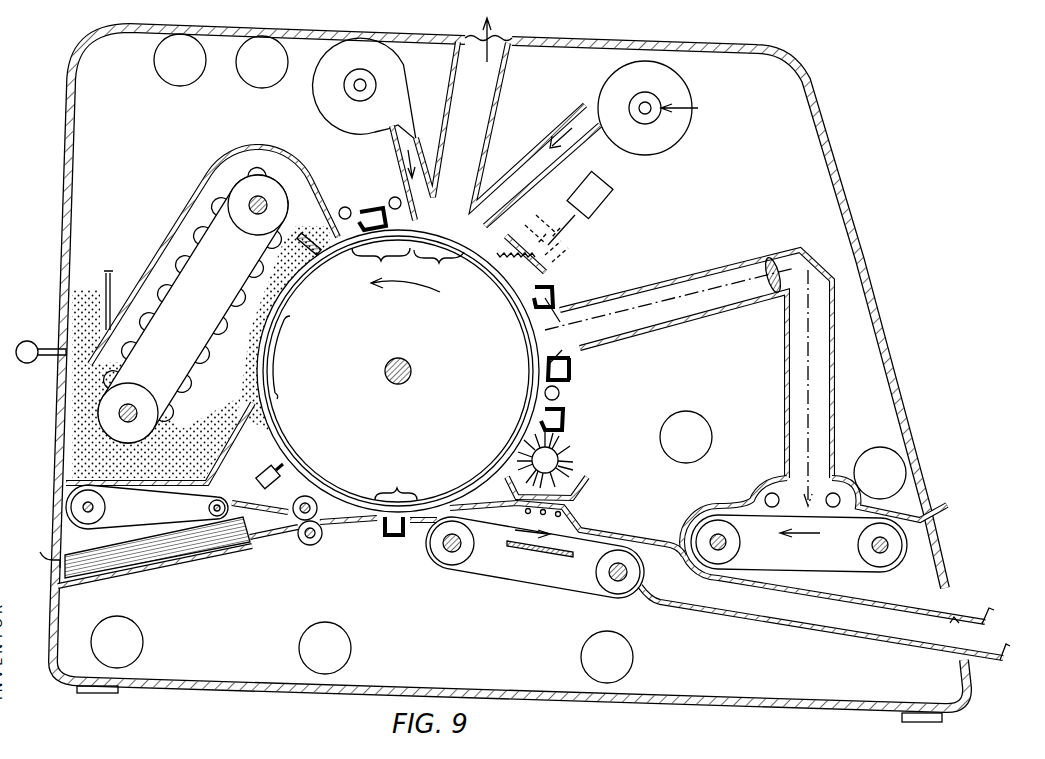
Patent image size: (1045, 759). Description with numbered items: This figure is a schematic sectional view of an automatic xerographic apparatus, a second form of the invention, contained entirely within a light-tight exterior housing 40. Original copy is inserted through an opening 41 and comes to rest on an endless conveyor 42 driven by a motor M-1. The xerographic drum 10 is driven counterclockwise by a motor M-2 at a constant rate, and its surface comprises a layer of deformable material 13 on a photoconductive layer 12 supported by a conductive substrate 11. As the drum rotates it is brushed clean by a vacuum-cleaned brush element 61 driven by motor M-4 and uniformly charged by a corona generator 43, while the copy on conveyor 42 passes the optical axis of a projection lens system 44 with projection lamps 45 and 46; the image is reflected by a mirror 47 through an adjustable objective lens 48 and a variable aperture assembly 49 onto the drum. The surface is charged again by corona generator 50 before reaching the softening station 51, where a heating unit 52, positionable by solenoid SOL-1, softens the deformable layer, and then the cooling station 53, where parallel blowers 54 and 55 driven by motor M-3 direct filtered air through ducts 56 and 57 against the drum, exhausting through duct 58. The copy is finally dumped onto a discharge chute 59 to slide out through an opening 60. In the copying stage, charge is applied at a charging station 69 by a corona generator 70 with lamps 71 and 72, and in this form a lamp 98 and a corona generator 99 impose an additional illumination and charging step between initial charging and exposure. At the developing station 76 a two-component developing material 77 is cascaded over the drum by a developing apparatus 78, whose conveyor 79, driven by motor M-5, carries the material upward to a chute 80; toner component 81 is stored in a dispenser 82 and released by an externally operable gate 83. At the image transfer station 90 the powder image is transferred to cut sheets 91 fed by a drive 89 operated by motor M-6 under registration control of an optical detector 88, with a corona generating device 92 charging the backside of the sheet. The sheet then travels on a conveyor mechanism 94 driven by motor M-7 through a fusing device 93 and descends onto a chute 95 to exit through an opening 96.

The xerographic drum 10 is at (267, 456).
The conductive substrate 11 is at (279, 432).
The photoconductive layer 12 is at (284, 448).
The layer of deformable material 13 is at (289, 463).
The light-tight exterior housing 40 is at (880, 336).
The opening 41 is at (942, 506).
The conveyor 42 is at (858, 569).
The corona generator 43 is at (566, 418).
The projection lens system 44 is at (766, 441).
The projection lamp 45 is at (772, 492).
The projection lamp 46 is at (846, 474).
The mirror 47 is at (798, 252).
The adjustable objective lens 48 is at (764, 264).
The variable aperture assembly 49 is at (550, 335).
The corona generator 50 is at (556, 296).
The softening station 51 is at (492, 292).
The heating unit 52 is at (552, 279).
The cooling station 53 is at (439, 267).
The blower 54 is at (396, 54).
The blower 55 is at (624, 70).
The duct 56 is at (394, 155).
The duct 57 is at (572, 146).
The duct 58 is at (512, 56).
The discharge chute 59 is at (744, 589).
The opening 60 is at (948, 606).
The brush element 61 is at (568, 446).
The charging station 69 is at (381, 266).
The corona generator 70 is at (362, 208).
The lamp 71 is at (345, 207).
The lamp 72 is at (395, 197).
The developing station 76 is at (282, 320).
The two-component developing material 77 is at (228, 430).
The developing apparatus 78 is at (194, 184).
The conveyor 79 is at (202, 430).
The chute 80 is at (306, 249).
The toner component 81 is at (108, 274).
The dispenser 82 is at (92, 284).
The externally operable gate 83 is at (62, 362).
The optical detector 88 is at (278, 484).
The drive 89 is at (72, 507).
The image transfer station 90 is at (396, 485).
The cut sheets 91 is at (180, 553).
The corona generating device 92 is at (394, 538).
The fusing device 93 is at (576, 516).
The conveyor mechanism 94 is at (480, 580).
The chute 95 is at (736, 620).
The opening 96 is at (976, 636).
The lamp 98 is at (560, 393).
The corona generator 99 is at (571, 372).
The motor M-1 is at (880, 545).
The motor M-2 is at (398, 371).
The motor M-3 is at (340, 89).
The motor M-4 is at (548, 460).
The motor M-5 is at (256, 200).
The motor M-6 is at (310, 533).
The motor M-7 is at (618, 572).
The solenoid SOL-1 is at (600, 201).